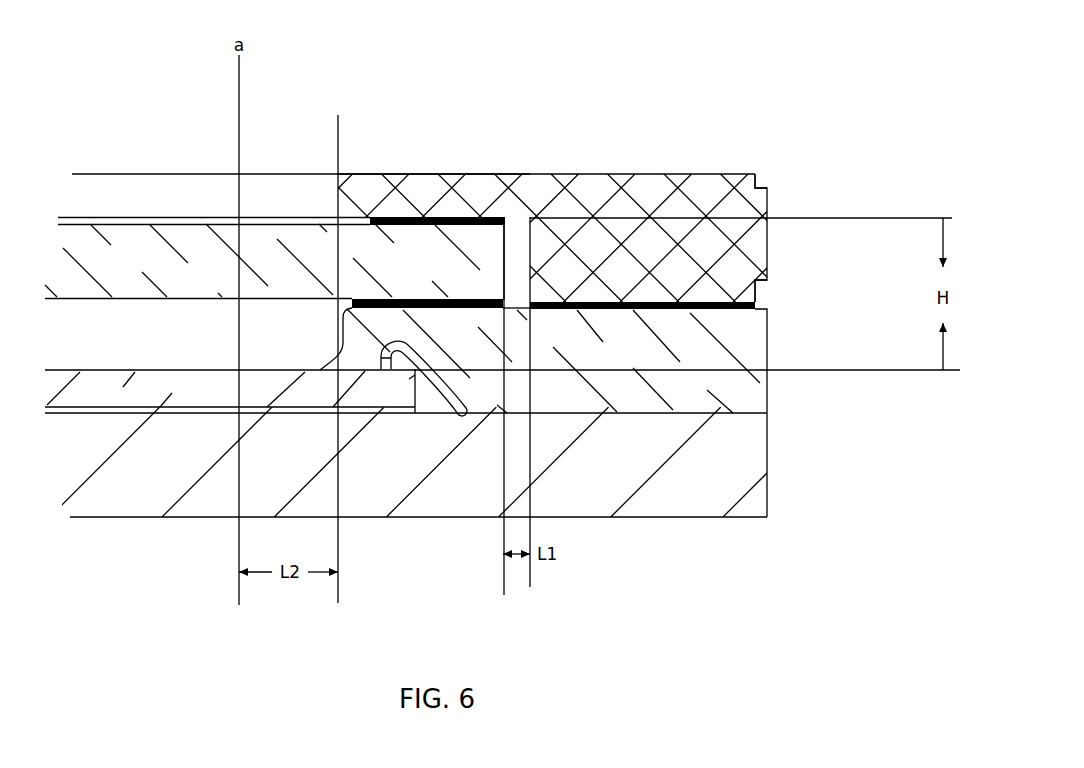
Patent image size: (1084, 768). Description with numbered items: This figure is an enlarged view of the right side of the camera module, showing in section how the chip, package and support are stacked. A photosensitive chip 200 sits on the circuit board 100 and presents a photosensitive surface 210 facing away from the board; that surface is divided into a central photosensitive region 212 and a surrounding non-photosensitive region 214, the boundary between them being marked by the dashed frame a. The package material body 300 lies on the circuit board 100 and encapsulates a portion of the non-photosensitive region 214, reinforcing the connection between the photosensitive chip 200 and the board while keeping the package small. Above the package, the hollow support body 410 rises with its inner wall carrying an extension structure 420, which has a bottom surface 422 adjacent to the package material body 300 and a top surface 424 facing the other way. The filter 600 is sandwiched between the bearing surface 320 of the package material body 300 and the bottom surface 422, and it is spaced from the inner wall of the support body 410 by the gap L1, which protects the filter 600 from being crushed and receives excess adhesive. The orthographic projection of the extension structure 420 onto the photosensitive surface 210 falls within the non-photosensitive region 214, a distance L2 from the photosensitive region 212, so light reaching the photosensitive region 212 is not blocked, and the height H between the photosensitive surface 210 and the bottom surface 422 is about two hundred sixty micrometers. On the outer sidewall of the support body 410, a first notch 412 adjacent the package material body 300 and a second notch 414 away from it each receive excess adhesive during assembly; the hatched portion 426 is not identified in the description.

The circuit board 100 is at (735, 465).
The photosensitive chip 200 is at (188, 390).
The photosensitive surface 210 is at (357, 456).
The photosensitive region 212 is at (203, 372).
The non-photosensitive region 214 is at (287, 372).
The package material body 300 is at (663, 357).
The bearing surface 320 is at (533, 285).
The support body 410 is at (725, 272).
The first notch 412 is at (765, 292).
The second notch 414 is at (762, 177).
The extension structure 420 is at (423, 198).
The bottom surface 422 is at (521, 217).
The top surface 424 is at (453, 172).
The side portion 426 is at (375, 185).
The filter 600 is at (122, 278).